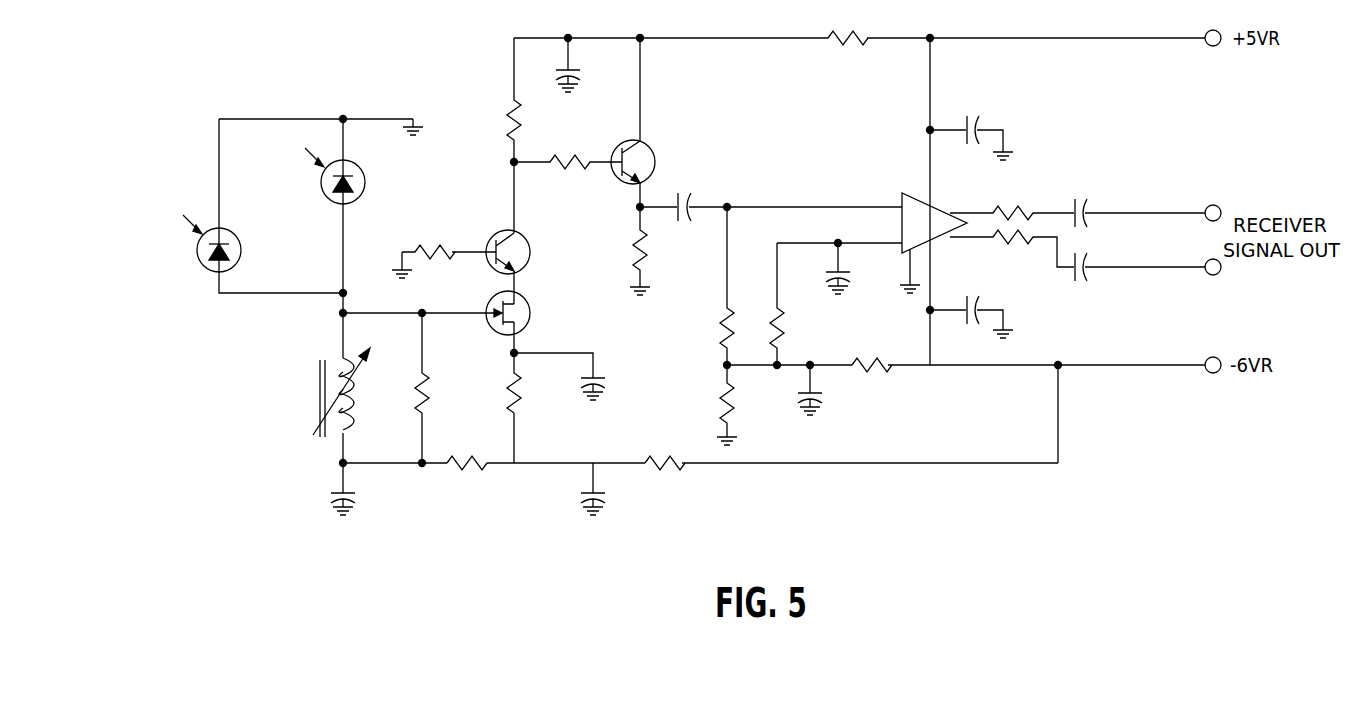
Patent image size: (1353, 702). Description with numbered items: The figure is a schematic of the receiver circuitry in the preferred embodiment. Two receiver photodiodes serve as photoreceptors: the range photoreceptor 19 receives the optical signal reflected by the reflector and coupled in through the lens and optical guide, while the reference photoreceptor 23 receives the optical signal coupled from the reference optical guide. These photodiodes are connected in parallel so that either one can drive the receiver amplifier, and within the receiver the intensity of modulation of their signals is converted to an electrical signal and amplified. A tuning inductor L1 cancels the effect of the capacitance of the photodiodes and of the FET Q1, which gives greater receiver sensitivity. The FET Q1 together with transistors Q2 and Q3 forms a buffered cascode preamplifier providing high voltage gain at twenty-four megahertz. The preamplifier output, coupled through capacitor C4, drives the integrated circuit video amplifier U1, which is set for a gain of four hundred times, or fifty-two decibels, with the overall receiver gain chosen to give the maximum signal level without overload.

The photoreceptor 19 is at (365, 178).
The photoreceptor 23 is at (200, 262).
The tuning inductor L1 is at (299, 392).
The integrated circuit video amplifier U1 is at (933, 243).
The FET Q1 is at (522, 322).
The transistor Q2 is at (642, 122).
The transistor Q3 is at (505, 261).
The coupling capacitor 10n C4 is at (771, 205).